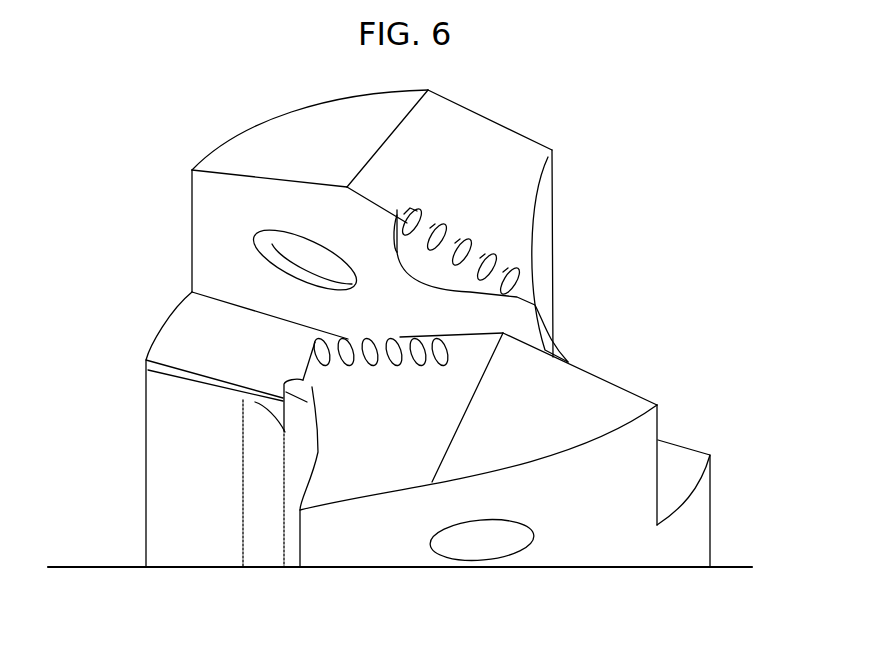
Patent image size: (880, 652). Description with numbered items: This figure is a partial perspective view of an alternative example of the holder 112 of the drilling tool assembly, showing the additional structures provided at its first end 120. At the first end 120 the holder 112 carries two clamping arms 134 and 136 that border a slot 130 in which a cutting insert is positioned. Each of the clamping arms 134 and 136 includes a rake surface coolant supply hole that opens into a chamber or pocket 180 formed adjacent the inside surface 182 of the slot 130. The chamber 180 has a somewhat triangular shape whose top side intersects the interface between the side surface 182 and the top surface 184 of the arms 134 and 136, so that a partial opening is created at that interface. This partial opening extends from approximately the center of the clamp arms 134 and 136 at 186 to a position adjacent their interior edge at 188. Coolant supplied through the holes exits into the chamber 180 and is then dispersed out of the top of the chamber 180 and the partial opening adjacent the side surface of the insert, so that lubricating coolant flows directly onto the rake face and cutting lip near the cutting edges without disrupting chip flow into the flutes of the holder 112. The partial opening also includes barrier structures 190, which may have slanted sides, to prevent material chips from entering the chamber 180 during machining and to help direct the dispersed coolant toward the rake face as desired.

The holder 112 is at (117, 380).
The first end 120 is at (507, 93).
The slot 130 is at (673, 468).
The clamping arm 134 is at (538, 142).
The clamping arm 136 is at (357, 480).
The chamber 180 is at (397, 250).
The inside surface 182 is at (217, 202).
The top surface 184 is at (603, 405).
The center position of clamp arms 186 is at (392, 187).
The position adjacent interior edge of clamp arms 188 is at (512, 267).
The barrier structures 190 is at (422, 350).